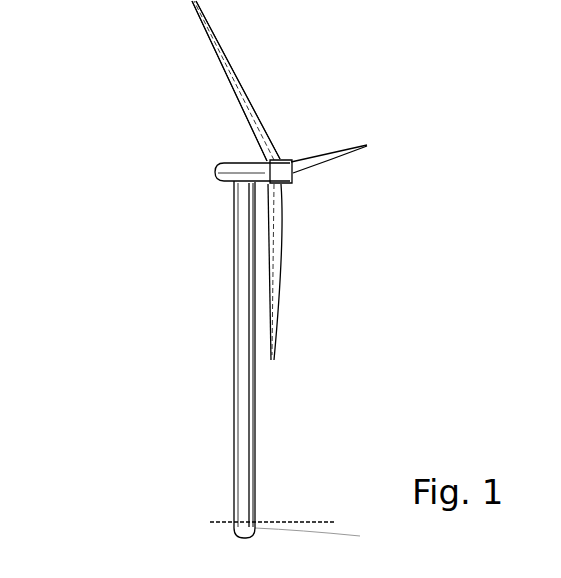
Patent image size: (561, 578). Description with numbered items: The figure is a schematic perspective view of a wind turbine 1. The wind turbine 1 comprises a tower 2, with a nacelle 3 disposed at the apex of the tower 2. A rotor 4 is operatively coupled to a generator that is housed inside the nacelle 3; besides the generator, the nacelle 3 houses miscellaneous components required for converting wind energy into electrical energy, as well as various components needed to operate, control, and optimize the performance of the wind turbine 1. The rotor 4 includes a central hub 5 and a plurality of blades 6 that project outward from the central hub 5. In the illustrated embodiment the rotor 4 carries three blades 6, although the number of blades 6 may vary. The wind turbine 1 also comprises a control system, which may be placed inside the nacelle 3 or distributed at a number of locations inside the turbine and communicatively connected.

The wind turbine 1 is at (106, 131).
The tower 2 is at (240, 295).
The nacelle 3 is at (232, 165).
The rotor 4 is at (346, 236).
The central hub 5 is at (274, 163).
The blades 6 is at (237, 82).